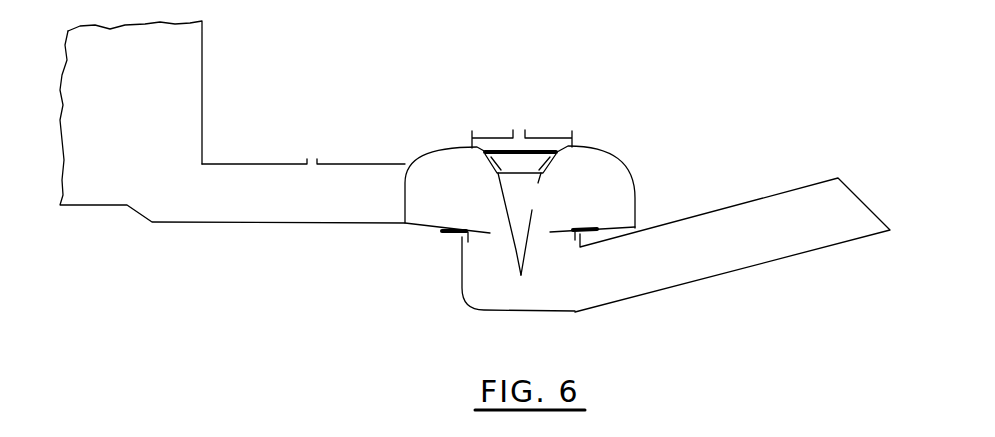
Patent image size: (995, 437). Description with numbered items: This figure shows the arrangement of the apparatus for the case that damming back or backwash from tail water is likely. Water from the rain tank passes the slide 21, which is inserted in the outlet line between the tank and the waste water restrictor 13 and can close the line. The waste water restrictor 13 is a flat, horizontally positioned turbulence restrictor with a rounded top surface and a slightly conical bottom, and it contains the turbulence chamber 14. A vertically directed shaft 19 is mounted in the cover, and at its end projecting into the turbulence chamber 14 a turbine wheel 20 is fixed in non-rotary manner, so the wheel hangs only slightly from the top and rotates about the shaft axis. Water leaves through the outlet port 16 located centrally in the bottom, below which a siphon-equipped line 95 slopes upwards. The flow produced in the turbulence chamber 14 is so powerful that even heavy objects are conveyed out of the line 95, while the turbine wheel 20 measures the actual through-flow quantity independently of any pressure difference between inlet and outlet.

The waste water restrictor 13 is at (610, 160).
The turbulence chamber 14 is at (571, 168).
The outlet port 16 is at (520, 234).
The shaft 19 is at (520, 150).
The turbine wheel 20 is at (524, 224).
The slide 21 is at (312, 100).
The siphon-equipped line 95 is at (803, 235).